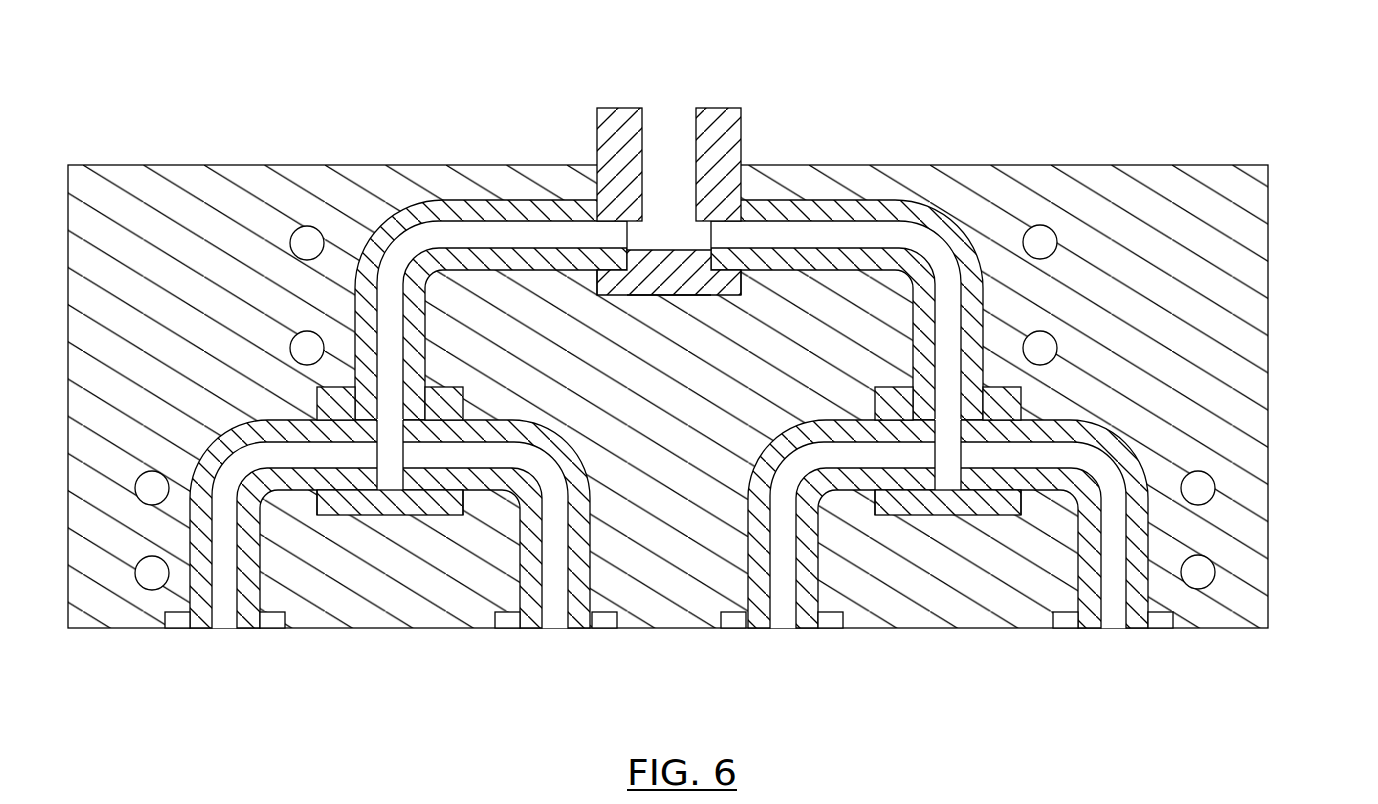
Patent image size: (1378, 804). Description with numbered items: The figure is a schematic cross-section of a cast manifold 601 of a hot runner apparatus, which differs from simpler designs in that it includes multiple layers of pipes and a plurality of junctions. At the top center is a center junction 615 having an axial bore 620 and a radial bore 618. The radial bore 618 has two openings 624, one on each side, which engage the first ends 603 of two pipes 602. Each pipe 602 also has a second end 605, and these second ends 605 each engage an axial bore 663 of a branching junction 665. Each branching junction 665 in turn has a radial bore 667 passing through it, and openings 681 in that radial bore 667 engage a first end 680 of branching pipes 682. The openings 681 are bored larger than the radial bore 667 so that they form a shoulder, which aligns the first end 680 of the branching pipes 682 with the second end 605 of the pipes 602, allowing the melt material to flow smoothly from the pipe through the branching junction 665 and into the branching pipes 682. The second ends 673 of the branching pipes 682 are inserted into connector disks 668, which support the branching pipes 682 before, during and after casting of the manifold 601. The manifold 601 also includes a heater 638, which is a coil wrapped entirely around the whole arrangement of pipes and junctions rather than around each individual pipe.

The manifold 601 is at (1219, 119).
The pipes 602 is at (390, 233).
The first ends 603 is at (633, 190).
The second ends 605 is at (473, 420).
The center junction 615 is at (667, 283).
The radial bore 618 is at (648, 238).
The axial bore 620 is at (692, 142).
The openings 624 is at (593, 285).
The heater 638 is at (1047, 238).
The axial bore 663 is at (420, 388).
The branching junctions 665 is at (322, 400).
The radial bore 667 is at (385, 495).
The connector disks 668 is at (177, 630).
The second ends 673 is at (250, 630).
The first end 680 is at (955, 440).
The openings 681 is at (325, 495).
The branching pipes 682 is at (225, 455).